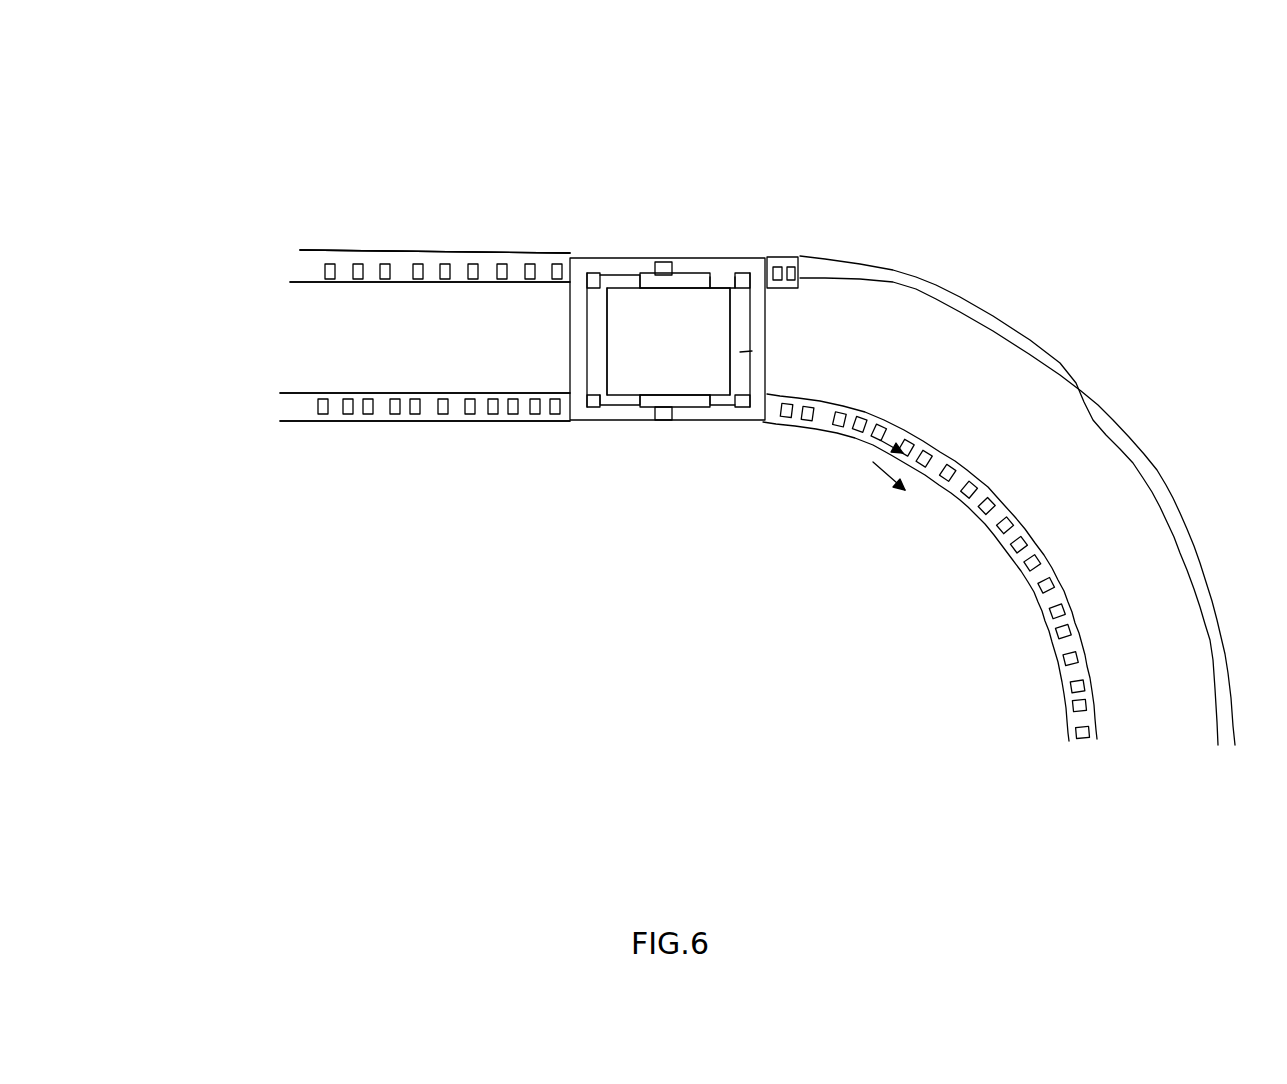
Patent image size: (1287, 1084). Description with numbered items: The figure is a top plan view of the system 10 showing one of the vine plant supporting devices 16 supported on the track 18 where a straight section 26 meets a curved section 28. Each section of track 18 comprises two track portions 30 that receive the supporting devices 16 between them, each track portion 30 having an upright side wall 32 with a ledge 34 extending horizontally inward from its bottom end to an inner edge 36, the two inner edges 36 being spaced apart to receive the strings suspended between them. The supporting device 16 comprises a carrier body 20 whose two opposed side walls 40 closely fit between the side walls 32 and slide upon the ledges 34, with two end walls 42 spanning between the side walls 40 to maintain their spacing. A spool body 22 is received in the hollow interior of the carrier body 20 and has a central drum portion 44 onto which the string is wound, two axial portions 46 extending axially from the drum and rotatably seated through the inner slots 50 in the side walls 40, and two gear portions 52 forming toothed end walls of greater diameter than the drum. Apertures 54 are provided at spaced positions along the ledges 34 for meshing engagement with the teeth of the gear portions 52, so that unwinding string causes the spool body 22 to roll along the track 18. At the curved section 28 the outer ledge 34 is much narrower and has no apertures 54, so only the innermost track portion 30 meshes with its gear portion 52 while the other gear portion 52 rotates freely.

The system 10 is at (897, 182).
The vine plant supporting device 16 is at (540, 347).
The track 18 is at (385, 240).
The carrier body 20 is at (765, 325).
The spool body 22 is at (740, 352).
The straight section 26 is at (431, 484).
The curved section 28 is at (960, 583).
The track portion 30 is at (268, 270).
The upright side wall 32 is at (333, 255).
The ledge 34 is at (372, 272).
The inner edge 36 is at (400, 283).
The side wall 40 is at (605, 265).
The end wall 42 is at (570, 363).
The central drum portion 44 is at (705, 330).
The axial portion 46 is at (688, 265).
The inner slot 50 is at (667, 262).
The gear portion 52 is at (582, 270).
The aperture 54 is at (932, 450).